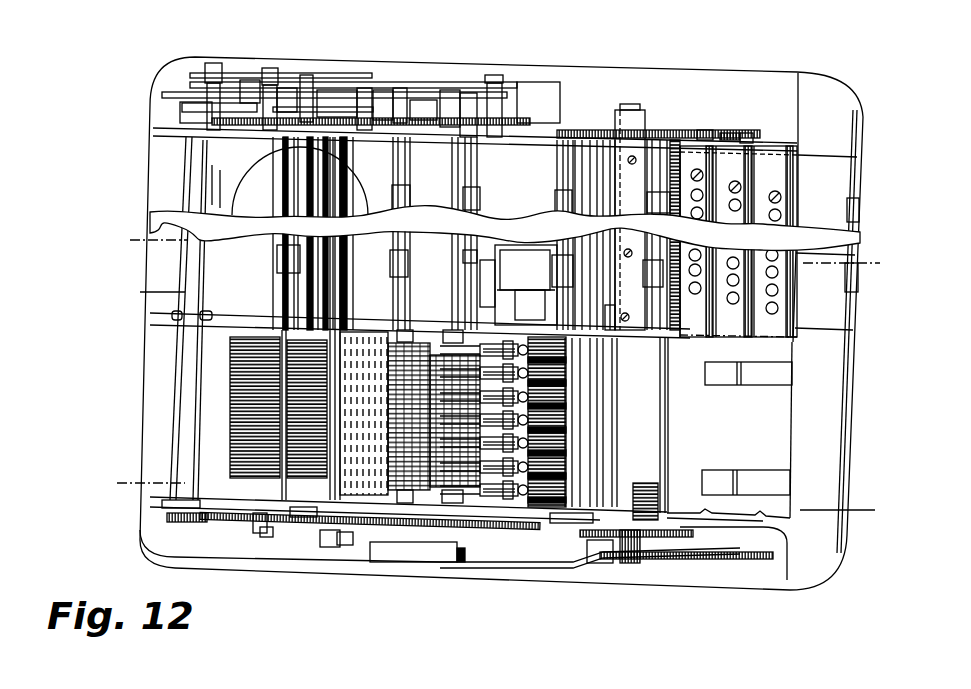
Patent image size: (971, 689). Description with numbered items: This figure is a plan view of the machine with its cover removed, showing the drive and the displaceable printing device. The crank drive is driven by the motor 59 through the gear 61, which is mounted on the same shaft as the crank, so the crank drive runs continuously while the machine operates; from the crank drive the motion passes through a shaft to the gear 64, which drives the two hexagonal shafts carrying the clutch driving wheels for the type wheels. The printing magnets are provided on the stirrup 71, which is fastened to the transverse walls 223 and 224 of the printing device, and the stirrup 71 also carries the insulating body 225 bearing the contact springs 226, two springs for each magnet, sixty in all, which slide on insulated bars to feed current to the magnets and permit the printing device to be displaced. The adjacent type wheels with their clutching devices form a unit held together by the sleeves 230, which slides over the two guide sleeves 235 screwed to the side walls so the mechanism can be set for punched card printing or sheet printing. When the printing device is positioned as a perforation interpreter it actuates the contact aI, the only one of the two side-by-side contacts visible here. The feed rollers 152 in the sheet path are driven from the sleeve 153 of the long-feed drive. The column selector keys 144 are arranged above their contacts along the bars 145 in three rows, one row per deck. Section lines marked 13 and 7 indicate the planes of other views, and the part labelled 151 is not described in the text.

The gear 61 is at (163, 134).
The motor 59 is at (230, 190).
The guide sleeves 235 is at (187, 288).
The sleeves 230 is at (187, 363).
The transverse wall 224 is at (175, 320).
The sleeve 153 is at (414, 115).
The gear 64 is at (513, 140).
The bars 145 is at (762, 320).
The keys 144 is at (698, 175).
The side catch 151 is at (860, 208).
The stirrup 71 is at (560, 307).
The insulating body 225 is at (553, 295).
The feed rollers 152 is at (657, 210).
The contact springs 226 is at (611, 318).
The transverse wall 223 is at (485, 520).
The contact aI is at (608, 497).
The section line 13- 13 is at (128, 240).
The section line 7- 7 is at (117, 455).